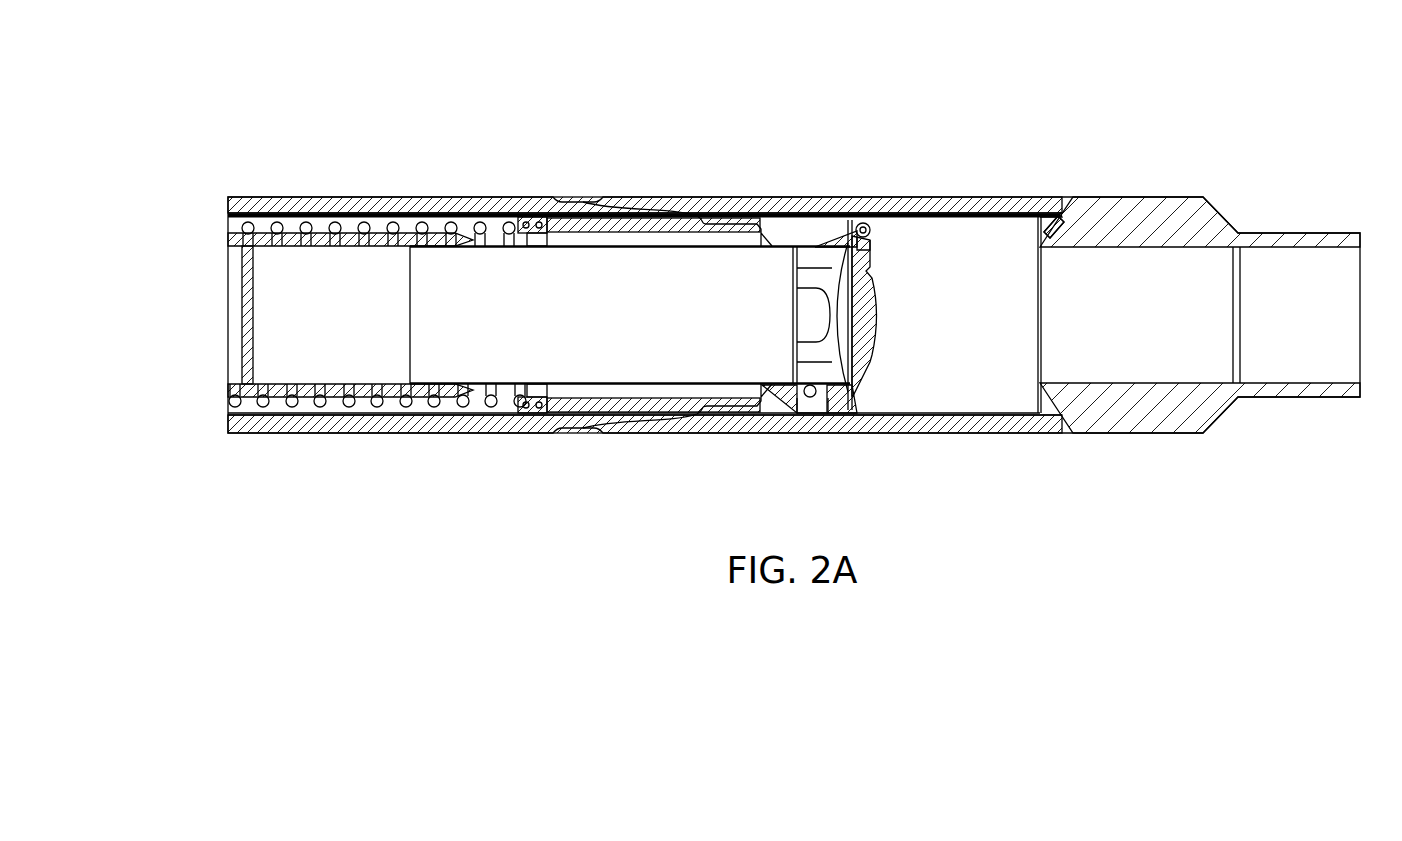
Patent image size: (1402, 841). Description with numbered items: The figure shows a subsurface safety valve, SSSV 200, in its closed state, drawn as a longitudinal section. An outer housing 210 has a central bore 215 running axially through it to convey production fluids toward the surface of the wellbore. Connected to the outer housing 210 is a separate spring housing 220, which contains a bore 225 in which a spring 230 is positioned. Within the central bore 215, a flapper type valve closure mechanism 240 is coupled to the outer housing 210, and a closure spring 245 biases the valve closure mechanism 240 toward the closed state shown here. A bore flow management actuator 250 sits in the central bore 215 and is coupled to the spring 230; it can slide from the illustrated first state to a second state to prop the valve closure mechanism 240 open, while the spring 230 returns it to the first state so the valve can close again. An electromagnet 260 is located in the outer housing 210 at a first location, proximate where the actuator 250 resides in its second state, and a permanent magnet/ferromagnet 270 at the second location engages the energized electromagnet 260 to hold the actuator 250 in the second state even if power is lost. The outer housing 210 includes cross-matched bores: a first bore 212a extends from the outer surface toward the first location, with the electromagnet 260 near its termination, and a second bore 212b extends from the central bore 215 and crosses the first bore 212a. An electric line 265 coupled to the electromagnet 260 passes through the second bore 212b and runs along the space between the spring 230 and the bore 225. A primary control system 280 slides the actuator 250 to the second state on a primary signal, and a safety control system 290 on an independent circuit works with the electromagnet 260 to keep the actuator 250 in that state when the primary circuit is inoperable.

The SSSV 200 is at (203, 84).
The outer housing 210 is at (1162, 198).
The first bore 212a is at (1064, 224).
The second bore 212b is at (1053, 217).
The central bore 215 is at (1275, 327).
The spring housing 220 is at (548, 197).
The bore 225 is at (448, 412).
The spring 230 is at (518, 413).
The valve closure mechanism 240 is at (857, 400).
The closure spring 245 is at (867, 220).
The bore flow management actuator 250 is at (650, 250).
The electromagnet 260 is at (1053, 217).
The electric line 265 is at (973, 213).
The permanent magnet/ferromagnet 270 is at (777, 243).
The primary control system 280 is at (207, 404).
The safety control system 290 is at (207, 216).